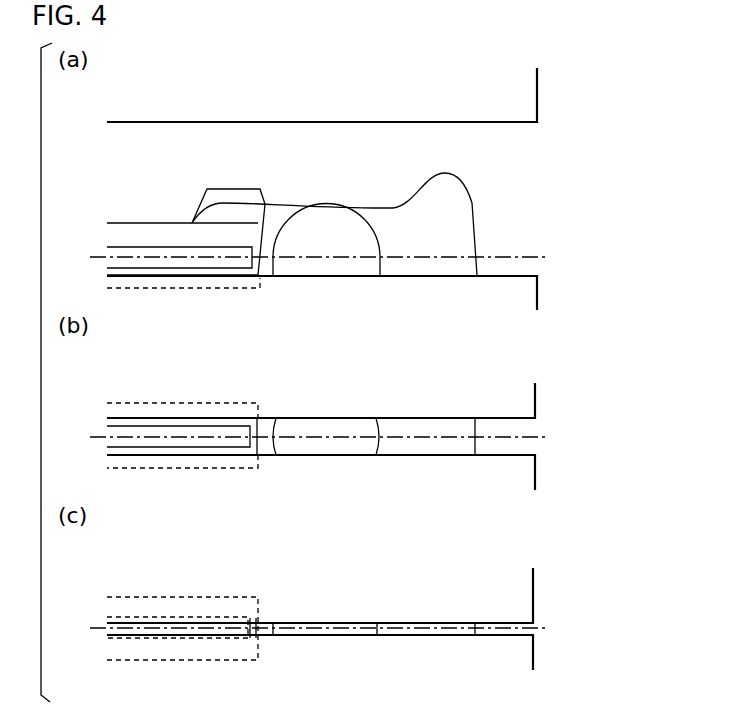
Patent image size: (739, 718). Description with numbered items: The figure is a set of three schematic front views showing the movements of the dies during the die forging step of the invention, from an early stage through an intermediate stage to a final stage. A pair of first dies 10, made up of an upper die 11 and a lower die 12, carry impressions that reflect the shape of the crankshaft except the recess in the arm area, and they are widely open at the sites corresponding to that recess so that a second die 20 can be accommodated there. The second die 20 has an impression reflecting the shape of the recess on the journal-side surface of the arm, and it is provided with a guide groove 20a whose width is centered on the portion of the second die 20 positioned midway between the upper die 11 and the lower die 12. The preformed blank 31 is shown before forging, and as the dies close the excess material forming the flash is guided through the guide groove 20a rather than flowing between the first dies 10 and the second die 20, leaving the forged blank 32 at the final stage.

The first dies 10 is at (389, 369).
The upper die 11 is at (527, 102).
The lower die 12 is at (527, 295).
The second die 20 is at (137, 213).
The guide groove 20a is at (177, 252).
The preformed blank 31 is at (491, 209).
The preformed blank 32 is at (367, 625).